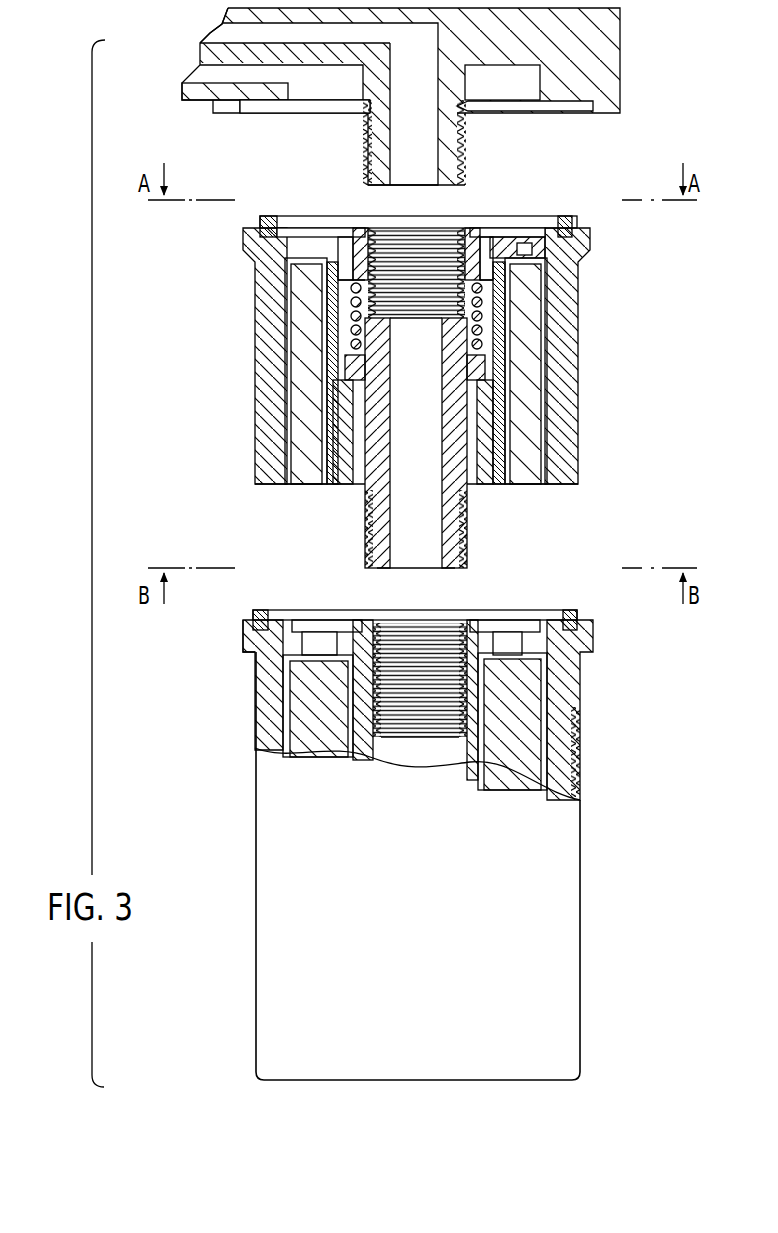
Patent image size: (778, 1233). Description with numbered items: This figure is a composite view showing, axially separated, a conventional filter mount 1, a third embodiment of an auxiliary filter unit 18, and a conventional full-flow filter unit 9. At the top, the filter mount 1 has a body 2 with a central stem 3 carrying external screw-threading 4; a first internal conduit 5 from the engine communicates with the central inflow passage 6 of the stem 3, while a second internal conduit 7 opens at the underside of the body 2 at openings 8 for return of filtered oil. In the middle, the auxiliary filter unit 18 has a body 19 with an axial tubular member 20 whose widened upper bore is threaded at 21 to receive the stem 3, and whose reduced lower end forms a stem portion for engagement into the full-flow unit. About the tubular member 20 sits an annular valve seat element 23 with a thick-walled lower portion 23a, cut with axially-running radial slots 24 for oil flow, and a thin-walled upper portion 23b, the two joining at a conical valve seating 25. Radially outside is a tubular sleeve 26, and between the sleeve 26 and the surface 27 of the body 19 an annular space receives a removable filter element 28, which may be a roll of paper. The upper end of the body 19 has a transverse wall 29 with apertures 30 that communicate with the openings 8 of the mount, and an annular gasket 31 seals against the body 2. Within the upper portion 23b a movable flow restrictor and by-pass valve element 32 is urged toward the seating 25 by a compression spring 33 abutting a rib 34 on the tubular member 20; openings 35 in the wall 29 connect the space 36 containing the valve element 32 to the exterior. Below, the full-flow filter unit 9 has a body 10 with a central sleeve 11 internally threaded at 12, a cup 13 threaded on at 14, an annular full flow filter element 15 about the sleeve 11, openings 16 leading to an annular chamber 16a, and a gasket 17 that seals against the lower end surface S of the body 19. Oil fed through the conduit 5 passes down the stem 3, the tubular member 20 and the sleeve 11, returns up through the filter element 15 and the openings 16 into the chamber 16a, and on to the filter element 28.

The filter mount 1 is at (634, 64).
The body 2 is at (600, 27).
The central stem 3 is at (448, 146).
The external screw-threading 4 is at (466, 180).
The first internal conduit 5 is at (232, 30).
The central inflow passage 6 is at (402, 128).
The second internal conduit 7 is at (225, 78).
The openings 8 is at (310, 88).
The full-flow oil filter unit 9 is at (599, 697).
The body 10 is at (262, 661).
The central sleeve 11 is at (456, 702).
The internal threading 12 is at (447, 636).
The cup 13 is at (556, 831).
The threading 14 is at (580, 760).
The annular full flow filter element 15 is at (302, 721).
The openings 16 is at (320, 640).
The annular chamber 16a is at (352, 628).
The gasket 17 is at (581, 612).
The auxiliary filter unit 18 is at (595, 410).
The body 19 is at (560, 361).
The tubular member 20 is at (453, 470).
The threading 21 is at (426, 250).
The annular valve seat element 23 is at (338, 489).
The thick-walled lower portion 23a is at (490, 481).
The thin-walled upper portion 23b is at (330, 341).
The radial slots 24 is at (472, 471).
The conical valve seating 25 is at (370, 384).
The tubular sleeve 26 is at (327, 446).
The surface 27 is at (296, 401).
The removable filter element 28 is at (300, 375).
The transverse wall 29 is at (520, 238).
The apertures 30 is at (533, 252).
The annular gasket 31 is at (574, 219).
The flow restrictor and by-pass valve element 32 is at (462, 396).
The compression spring 33 is at (350, 300).
The rib 34 is at (362, 290).
The openings 35 is at (350, 243).
The space 36 is at (483, 322).
The lower end surface S is at (270, 490).